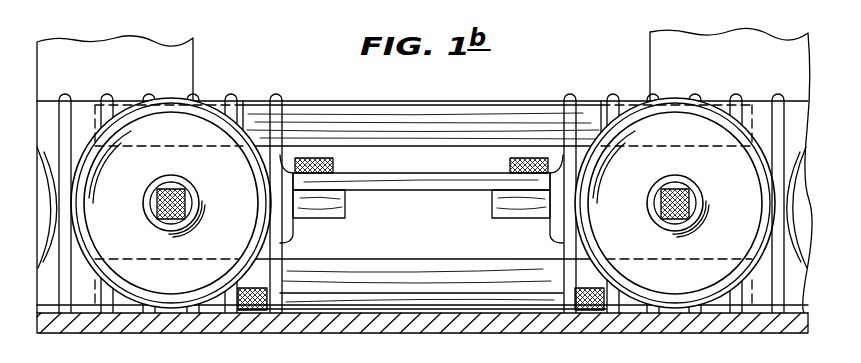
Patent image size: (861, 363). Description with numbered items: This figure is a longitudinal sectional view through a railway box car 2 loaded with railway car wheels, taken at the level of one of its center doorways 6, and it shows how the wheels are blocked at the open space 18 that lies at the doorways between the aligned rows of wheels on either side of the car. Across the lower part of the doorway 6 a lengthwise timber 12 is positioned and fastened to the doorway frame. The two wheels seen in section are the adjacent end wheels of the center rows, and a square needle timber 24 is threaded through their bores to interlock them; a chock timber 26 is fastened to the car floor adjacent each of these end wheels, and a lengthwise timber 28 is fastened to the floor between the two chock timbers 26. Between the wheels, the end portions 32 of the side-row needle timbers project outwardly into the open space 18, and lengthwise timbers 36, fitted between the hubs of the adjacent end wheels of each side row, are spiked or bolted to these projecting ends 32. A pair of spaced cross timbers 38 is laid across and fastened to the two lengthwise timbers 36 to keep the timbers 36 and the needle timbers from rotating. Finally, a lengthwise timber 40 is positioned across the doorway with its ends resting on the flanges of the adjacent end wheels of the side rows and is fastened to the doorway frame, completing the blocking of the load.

The railway box car 2 is at (175, 326).
The center doorway 6 is at (650, 50).
The lengthwise timber 12 is at (398, 268).
The open space 18 is at (410, 225).
The square needle timber 24 is at (184, 205).
The chock timber 26 is at (250, 303).
The lengthwise timber 28 is at (443, 298).
The end portion 32 is at (313, 212).
The lengthwise timber 36 is at (463, 183).
The cross timber 38 is at (313, 162).
The lengthwise timber 40 is at (490, 108).